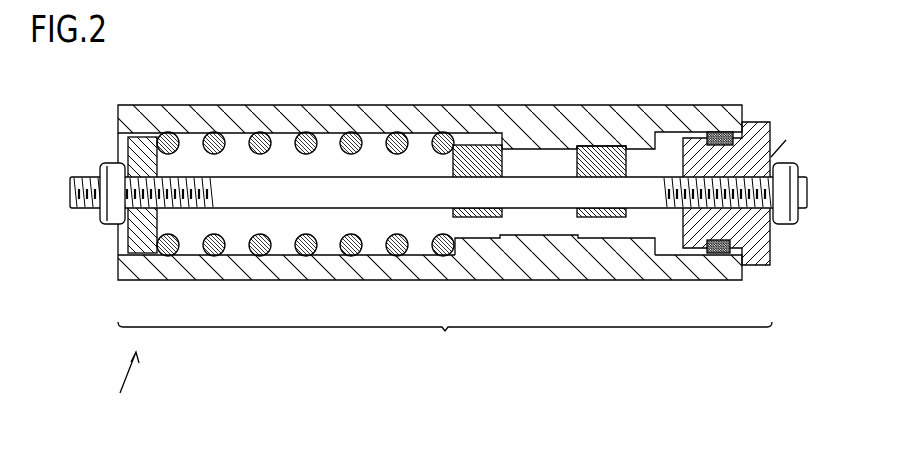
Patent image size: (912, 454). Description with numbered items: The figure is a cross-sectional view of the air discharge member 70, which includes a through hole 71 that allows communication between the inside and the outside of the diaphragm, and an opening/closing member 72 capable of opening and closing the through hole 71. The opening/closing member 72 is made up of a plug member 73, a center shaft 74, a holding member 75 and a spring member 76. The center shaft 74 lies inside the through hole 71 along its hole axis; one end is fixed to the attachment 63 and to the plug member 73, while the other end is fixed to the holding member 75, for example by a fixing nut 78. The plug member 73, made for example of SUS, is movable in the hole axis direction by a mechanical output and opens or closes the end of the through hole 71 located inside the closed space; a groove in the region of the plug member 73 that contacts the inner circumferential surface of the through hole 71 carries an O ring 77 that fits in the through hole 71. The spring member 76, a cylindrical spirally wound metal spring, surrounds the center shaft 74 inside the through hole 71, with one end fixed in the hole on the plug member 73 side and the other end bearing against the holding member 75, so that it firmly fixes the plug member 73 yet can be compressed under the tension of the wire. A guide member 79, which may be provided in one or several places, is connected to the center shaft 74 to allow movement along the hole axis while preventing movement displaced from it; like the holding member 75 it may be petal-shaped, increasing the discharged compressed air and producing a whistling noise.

The air discharge member 70 is at (122, 387).
The through hole 71 is at (313, 123).
The opening/closing member 72 is at (445, 340).
The plug member 73 is at (755, 245).
The center shaft 74 is at (477, 198).
The holding member 75 is at (140, 152).
The spring member 76 is at (212, 131).
The O ring 77 is at (723, 245).
The fixing nut 78 is at (113, 223).
The guide member 79 is at (473, 152).
The attachment 63 is at (785, 222).